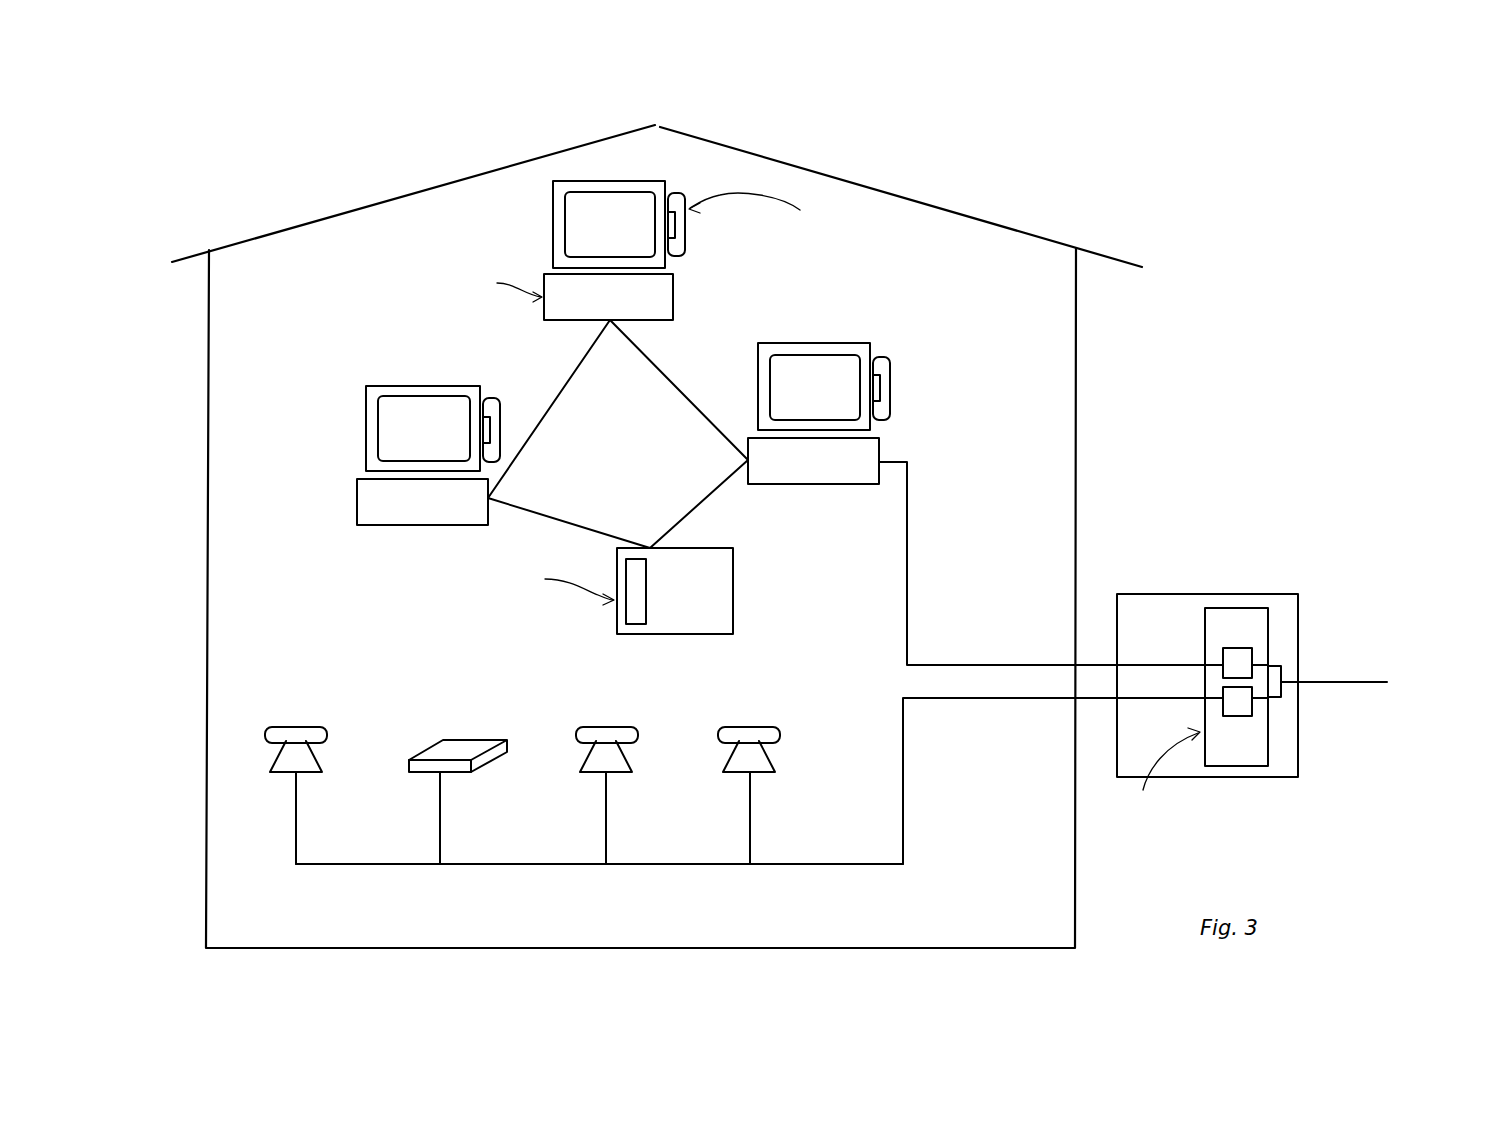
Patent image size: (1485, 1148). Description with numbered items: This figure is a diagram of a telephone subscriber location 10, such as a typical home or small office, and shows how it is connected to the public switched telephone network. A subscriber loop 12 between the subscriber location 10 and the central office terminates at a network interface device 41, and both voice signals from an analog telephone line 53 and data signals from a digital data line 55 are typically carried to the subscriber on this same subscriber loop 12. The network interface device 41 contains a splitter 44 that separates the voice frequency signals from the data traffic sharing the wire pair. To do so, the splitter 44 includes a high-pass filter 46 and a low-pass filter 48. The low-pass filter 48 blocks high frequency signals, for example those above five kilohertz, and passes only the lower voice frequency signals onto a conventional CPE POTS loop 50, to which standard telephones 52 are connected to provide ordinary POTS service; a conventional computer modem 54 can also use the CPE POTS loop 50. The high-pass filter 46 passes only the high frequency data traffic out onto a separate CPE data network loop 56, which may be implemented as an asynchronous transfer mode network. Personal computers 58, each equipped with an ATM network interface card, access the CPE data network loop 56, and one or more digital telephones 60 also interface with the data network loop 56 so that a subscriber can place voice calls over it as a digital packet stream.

The subscriber location 10 is at (922, 200).
The subscriber loop 12 is at (1365, 682).
The network interface device 41 is at (1156, 594).
The splitter 44 is at (1230, 608).
The high-pass filter 46 is at (1243, 648).
The low-pass filter 48 is at (1237, 716).
The CPE POTS loop 50 is at (516, 864).
The standard telephones 52 is at (298, 727).
The analog telephone line 53 is at (963, 700).
The computer modem 54 is at (466, 740).
The digital data line 55 is at (960, 662).
The CPE data network loop 56 is at (673, 385).
The personal computers 58 is at (675, 289).
The digital telephones 60 is at (686, 219).